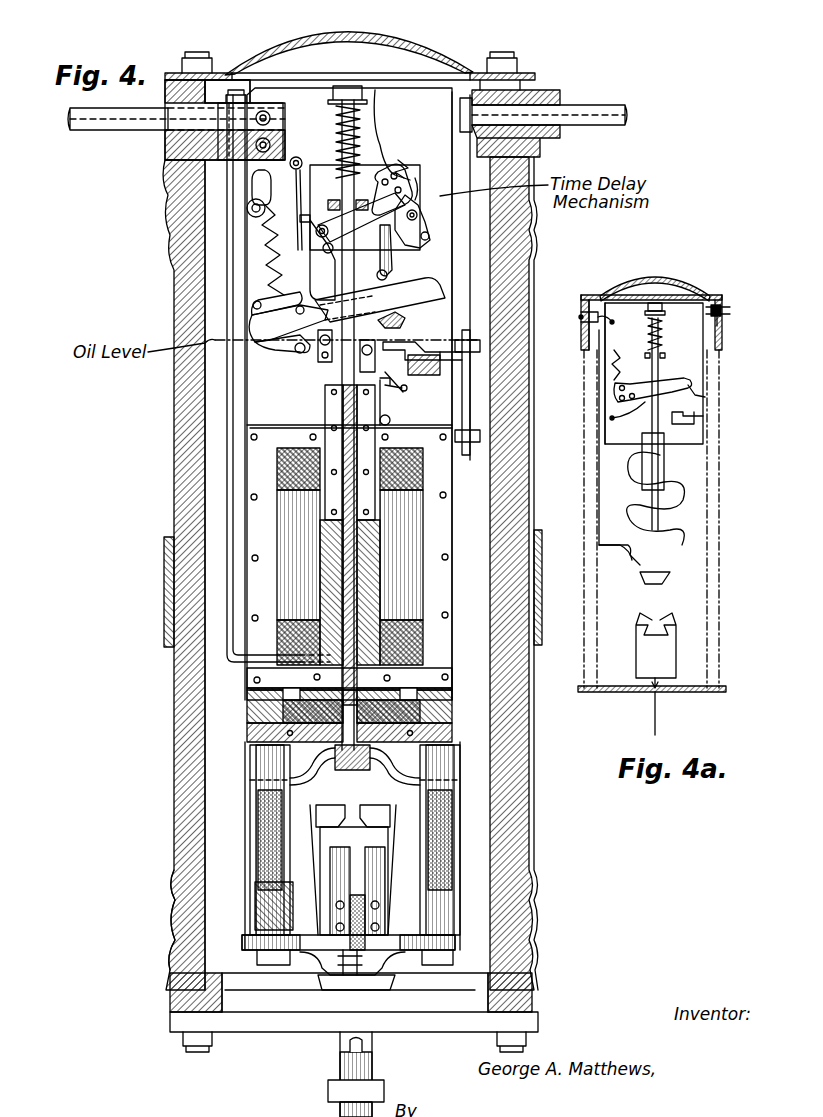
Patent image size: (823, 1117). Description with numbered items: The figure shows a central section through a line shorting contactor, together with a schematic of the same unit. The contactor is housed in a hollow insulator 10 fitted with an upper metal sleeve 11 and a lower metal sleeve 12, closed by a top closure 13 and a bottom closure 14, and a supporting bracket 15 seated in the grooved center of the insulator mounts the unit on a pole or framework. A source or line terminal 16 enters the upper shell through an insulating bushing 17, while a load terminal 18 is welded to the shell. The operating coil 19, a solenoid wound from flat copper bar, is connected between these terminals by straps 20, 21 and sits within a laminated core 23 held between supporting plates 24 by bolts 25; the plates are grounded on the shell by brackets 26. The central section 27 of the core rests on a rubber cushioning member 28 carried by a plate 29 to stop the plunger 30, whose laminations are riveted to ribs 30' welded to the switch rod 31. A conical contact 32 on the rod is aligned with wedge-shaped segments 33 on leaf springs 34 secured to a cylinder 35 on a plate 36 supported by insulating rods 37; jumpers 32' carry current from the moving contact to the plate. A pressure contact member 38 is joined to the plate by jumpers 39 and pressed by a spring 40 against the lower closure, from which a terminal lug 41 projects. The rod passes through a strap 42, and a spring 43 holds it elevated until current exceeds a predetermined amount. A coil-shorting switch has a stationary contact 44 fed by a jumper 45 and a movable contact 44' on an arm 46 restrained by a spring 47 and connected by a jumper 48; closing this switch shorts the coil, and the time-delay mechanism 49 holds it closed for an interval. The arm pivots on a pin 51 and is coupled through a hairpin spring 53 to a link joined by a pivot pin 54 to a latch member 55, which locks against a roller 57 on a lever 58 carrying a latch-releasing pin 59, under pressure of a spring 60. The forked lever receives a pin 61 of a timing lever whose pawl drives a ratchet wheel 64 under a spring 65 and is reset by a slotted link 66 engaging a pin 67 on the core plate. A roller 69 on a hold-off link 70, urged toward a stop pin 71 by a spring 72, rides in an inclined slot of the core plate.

In FIG. 4, the hollow insulator 10 is at (174, 476).
In FIG. 4A, the hollow insulator 10 is at (584, 537).
In FIG. 4, the upper metal sleeve 11 is at (168, 196).
In FIG. 4A, the upper metal sleeve 11 is at (585, 343).
In FIG. 4, the lower metal sleeve 12 is at (170, 940).
In FIG. 4, the top closure 13 is at (278, 52).
In FIG. 4A, the top closure 13 is at (656, 280).
In FIG. 4, the bottom closure 14 is at (288, 1026).
In FIG. 4A, the bottom closure 14 is at (612, 694).
In FIG. 4, the supporting bracket 15 is at (164, 600).
In FIG. 4, the source or line terminal 16 is at (595, 104).
In FIG. 4A, the source or line terminal 16 is at (732, 308).
In FIG. 4, the insulating bushing 17 is at (545, 103).
In FIG. 4A, the insulating bushing 17 is at (725, 303).
In FIG. 4, the load terminal 18 is at (122, 128).
In FIG. 4A, the load terminal 18 is at (563, 313).
In FIG. 4, the operating coil 19 is at (280, 478).
In FIG. 4A, the operating coil 19 is at (682, 496).
In FIG. 4, the strap 20 is at (478, 243).
In FIG. 4A, the strap 20 is at (706, 380).
In FIG. 4, the strap 21 is at (240, 316).
In FIG. 4A, the strap 21 is at (598, 408).
In FIG. 4, the laminated core 23 is at (250, 514).
In FIG. 4, the supporting plates 24 is at (245, 398).
In FIG. 4A, the supporting plates 24 is at (605, 470).
In FIG. 4, the bolts 25 is at (256, 434).
In FIG. 4, the brackets 26 is at (280, 128).
In FIG. 4, the central section of the laminated core 27 is at (250, 676).
In FIG. 4, the rubber cushioning member 28 is at (290, 706).
In FIG. 4, the plate 29 is at (250, 740).
In FIG. 4, the armature or plunger 30 is at (335, 545).
In FIG. 4, the ribs or core plate 30' is at (331, 368).
In FIG. 4, the switch rod 31 is at (356, 133).
In FIG. 4A, the switch rod 31 is at (659, 362).
In FIG. 4, the conical contact 32 is at (355, 772).
In FIG. 4A, the conical contact 32 is at (670, 585).
In FIG. 4A, the jumpers 32' is at (616, 568).
In FIG. 4, the wedge-shaped segments 33 is at (376, 806).
In FIG. 4A, the wedge-shaped segments 33 is at (670, 620).
In FIG. 4, the leaf springs 34 is at (332, 862).
In FIG. 4, the cylinder 35 is at (332, 893).
In FIG. 4, the plate 36 is at (448, 950).
In FIG. 4, the insulating rods 37 is at (262, 849).
In FIG. 4, the pressure contact member 38 is at (327, 988).
In FIG. 4, the jumpers 39 is at (300, 968).
In FIG. 4, the spring 40 is at (367, 962).
In FIG. 4, the terminal lug 41 is at (340, 1078).
In FIG. 4A, the terminal lug 41 is at (658, 720).
In FIG. 4, the strap 42 is at (339, 192).
In FIG. 4A, the strap 42 is at (645, 355).
In FIG. 4, the spring 43 is at (357, 150).
In FIG. 4A, the spring 43 is at (660, 322).
In FIG. 4, the stationary contact 44 is at (411, 354).
In FIG. 4A, the stationary contact 44 is at (687, 428).
In FIG. 4, the movable switch contact 44' is at (410, 322).
In FIG. 4A, the movable switch contact 44' is at (723, 401).
In FIG. 4, the jumper 45 is at (468, 374).
In FIG. 4, the arm 46 is at (440, 300).
In FIG. 4A, the arm 46 is at (670, 388).
In FIG. 4, the spring 47 is at (277, 229).
In FIG. 4A, the spring 47 is at (631, 365).
In FIG. 4, the jumper 48 is at (360, 307).
In FIG. 4A, the jumper 48 is at (612, 420).
In FIG. 4, the time-delay mechanism 49 is at (430, 180).
In FIG. 4, the pivot pin 51 is at (276, 299).
In FIG. 4, the hairpin spring 53 is at (282, 352).
In FIG. 4, the pivot pin 54 is at (325, 305).
In FIG. 4, the latch member 55 is at (302, 222).
In FIG. 4, the roller 57 is at (325, 258).
In FIG. 4, the lever 58 is at (361, 217).
In FIG. 4, the latch-releasing pin 59 is at (338, 230).
In FIG. 4, the spring 60 is at (300, 205).
In FIG. 4, the pin 61 is at (400, 192).
In FIG. 4, the ratchet wheel 64 is at (398, 242).
In FIG. 4, the spring 65 is at (411, 166).
In FIG. 4, the link 66 is at (393, 266).
In FIG. 4, the pin 67 is at (388, 283).
In FIG. 4, the roller 69 is at (330, 352).
In FIG. 4, the hold-off link 70 is at (388, 424).
In FIG. 4, the stop pin 71 is at (407, 392).
In FIG. 4, the spring 72 is at (400, 398).